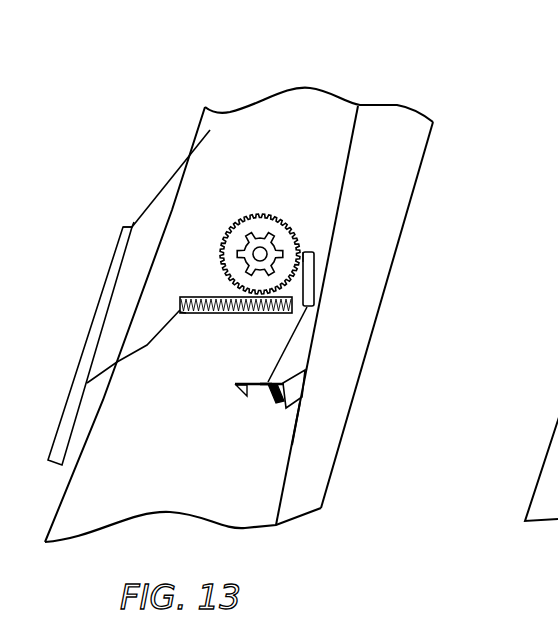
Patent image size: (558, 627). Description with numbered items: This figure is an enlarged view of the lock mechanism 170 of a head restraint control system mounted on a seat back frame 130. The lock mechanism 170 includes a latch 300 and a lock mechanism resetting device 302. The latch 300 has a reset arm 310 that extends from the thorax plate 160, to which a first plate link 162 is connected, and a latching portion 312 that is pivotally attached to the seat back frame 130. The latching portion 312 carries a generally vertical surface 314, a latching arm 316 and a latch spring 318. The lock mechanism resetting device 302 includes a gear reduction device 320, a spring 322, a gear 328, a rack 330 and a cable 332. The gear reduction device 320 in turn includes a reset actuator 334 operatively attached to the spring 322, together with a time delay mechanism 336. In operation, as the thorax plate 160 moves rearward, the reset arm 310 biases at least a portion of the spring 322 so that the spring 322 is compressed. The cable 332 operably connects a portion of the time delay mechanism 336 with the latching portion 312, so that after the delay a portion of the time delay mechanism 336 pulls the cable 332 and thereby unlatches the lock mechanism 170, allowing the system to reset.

The lock mechanism resetting device 302 is at (466, 160).
The seat back frame 130 is at (288, 480).
The lock mechanism 170 is at (289, 430).
The thorax plate 160 is at (82, 348).
The first plate link 162 is at (140, 222).
The time delay mechanism 336 is at (220, 232).
The reset arm 310 is at (133, 363).
The gear reduction device 320 is at (286, 247).
The gear 328 is at (299, 234).
The spring 322 is at (195, 313).
The rack 330 is at (314, 282).
The reset actuator 334 is at (314, 243).
The cable 332 is at (287, 345).
The latching arm 316 is at (255, 391).
The latching portion 312 is at (234, 387).
The generally vertical surface 314 is at (259, 392).
The latch spring 318 is at (278, 413).
The latch 300 is at (314, 385).